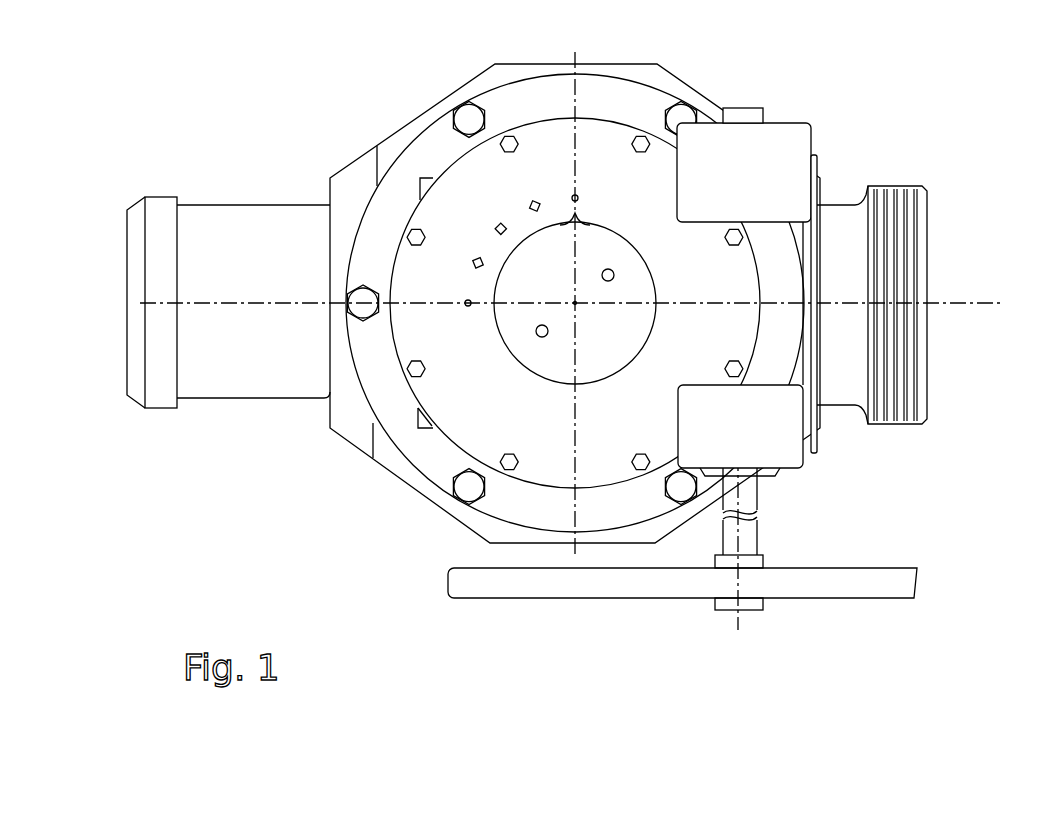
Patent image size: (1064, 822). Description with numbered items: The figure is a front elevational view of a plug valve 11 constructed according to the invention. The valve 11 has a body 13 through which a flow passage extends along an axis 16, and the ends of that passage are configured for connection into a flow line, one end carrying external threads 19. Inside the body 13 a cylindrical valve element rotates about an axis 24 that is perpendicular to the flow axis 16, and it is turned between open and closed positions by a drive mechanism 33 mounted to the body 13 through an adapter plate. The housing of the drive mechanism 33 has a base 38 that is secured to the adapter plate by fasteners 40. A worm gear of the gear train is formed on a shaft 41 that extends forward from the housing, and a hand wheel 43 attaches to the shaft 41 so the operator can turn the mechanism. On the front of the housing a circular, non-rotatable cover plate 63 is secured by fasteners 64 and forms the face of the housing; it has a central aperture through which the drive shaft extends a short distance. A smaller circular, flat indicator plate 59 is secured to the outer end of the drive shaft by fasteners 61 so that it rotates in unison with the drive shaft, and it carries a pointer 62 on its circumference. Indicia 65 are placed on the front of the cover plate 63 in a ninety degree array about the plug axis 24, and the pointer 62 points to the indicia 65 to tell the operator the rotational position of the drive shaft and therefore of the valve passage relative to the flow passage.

The valve 11 is at (912, 114).
The body 13 is at (397, 460).
The axis 16 is at (940, 303).
The external threads 19 is at (893, 425).
The axis 24 is at (578, 305).
The drive mechanism 33 is at (400, 393).
The base 38 is at (500, 512).
The fasteners 40 is at (676, 490).
The shaft 41 is at (750, 530).
The hand wheel 43 is at (868, 580).
The indicator plate 59 is at (645, 287).
The fasteners 61 is at (612, 271).
The pointer 62 is at (585, 216).
The cover plate 63 is at (467, 430).
The fasteners 64 is at (512, 454).
The indicia 65 is at (428, 265).